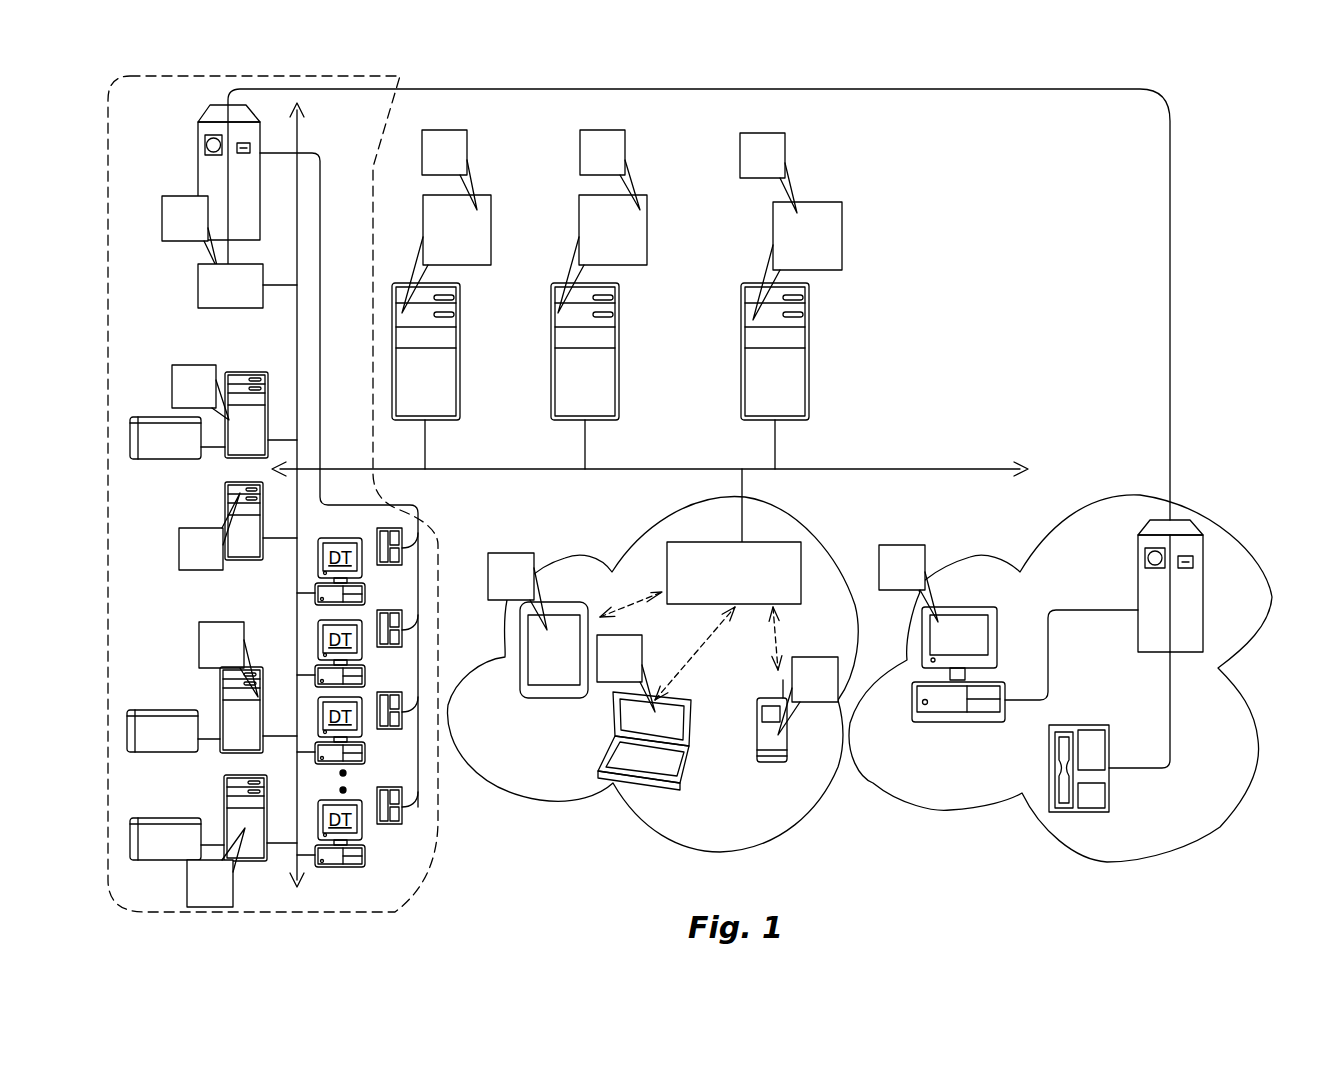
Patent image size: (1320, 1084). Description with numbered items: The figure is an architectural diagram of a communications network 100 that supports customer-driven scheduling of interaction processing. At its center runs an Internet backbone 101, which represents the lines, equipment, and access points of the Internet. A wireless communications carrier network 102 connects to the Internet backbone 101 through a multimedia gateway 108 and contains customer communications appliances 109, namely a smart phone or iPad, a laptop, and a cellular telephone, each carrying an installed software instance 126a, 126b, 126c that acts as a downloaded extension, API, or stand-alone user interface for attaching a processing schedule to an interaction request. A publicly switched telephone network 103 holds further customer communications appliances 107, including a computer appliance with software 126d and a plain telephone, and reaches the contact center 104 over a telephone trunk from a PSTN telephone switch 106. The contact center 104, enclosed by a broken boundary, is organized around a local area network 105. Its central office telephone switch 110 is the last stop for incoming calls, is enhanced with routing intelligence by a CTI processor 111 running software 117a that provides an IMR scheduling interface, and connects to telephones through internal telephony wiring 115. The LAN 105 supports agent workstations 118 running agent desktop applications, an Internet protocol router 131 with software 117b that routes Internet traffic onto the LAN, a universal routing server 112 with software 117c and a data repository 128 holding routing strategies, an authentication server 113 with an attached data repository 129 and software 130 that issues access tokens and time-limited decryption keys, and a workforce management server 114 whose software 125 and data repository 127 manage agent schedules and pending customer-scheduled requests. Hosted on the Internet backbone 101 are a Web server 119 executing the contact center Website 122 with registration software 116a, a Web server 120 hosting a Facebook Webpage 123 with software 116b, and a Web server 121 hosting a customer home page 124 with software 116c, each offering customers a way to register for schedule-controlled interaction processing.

The communications network 100 is at (1232, 283).
The Internet backbone 101 is at (868, 469).
The wireless communications carrier network 102 is at (612, 572).
The publicly switched telephone network 103 is at (1020, 572).
The contact center 104 is at (420, 547).
The local area network 105 is at (297, 363).
The PSTN telephone switch 106 is at (1138, 580).
The communications appliances 107 is at (980, 752).
The multimedia gateway 108 is at (722, 542).
The communications appliances 109 is at (578, 738).
The central office telephone switch 110 is at (197, 153).
The processor 111 is at (198, 300).
The universal routing server 112 is at (220, 705).
The authentication server 113 is at (225, 812).
The workforce management server 114 is at (258, 372).
The internal telephony wiring 115 is at (322, 178).
The software 116a is at (510, 140).
The software 116b is at (668, 140).
The software 116c is at (785, 162).
The software 117a is at (162, 208).
The software 117b is at (179, 540).
The software 117c is at (199, 635).
The agent workstations 118 is at (312, 650).
The Web server 119 is at (459, 343).
The Web server 120 is at (619, 343).
The Web server 121 is at (810, 343).
The Website 122 is at (491, 228).
The Facebook Webpage 123 is at (647, 228).
The home page 124 is at (842, 243).
The software 125 is at (172, 388).
The software 126a is at (488, 582).
The software 126b is at (680, 636).
The software 126c is at (838, 680).
The software 126d is at (912, 547).
The data repository 127 is at (148, 458).
The data repository 128 is at (182, 710).
The data repository 129 is at (182, 818).
The software 130 is at (187, 900).
The Internet protocol router 131 is at (222, 520).